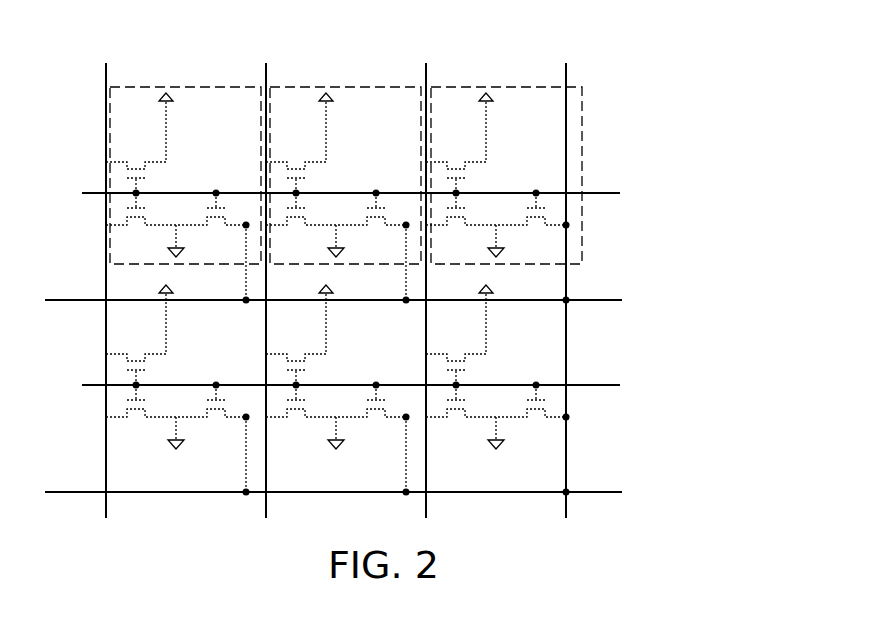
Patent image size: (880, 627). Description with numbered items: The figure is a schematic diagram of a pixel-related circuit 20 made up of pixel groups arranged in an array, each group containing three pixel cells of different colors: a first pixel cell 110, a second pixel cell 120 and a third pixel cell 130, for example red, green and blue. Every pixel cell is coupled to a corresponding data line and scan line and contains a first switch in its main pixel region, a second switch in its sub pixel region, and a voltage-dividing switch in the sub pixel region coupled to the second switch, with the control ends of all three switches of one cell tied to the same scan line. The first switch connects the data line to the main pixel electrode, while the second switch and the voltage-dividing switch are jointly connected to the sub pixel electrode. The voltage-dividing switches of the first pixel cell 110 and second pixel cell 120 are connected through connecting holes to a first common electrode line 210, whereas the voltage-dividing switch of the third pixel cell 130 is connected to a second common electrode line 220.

The pixel-related circuit 20 is at (386, 268).
The first pixel cell 110 is at (185, 88).
The second pixel cell 120 is at (346, 88).
The third pixel cell 130 is at (507, 88).
The first common electrode line 210 is at (608, 300).
The second common electrode line 220 is at (566, 63).